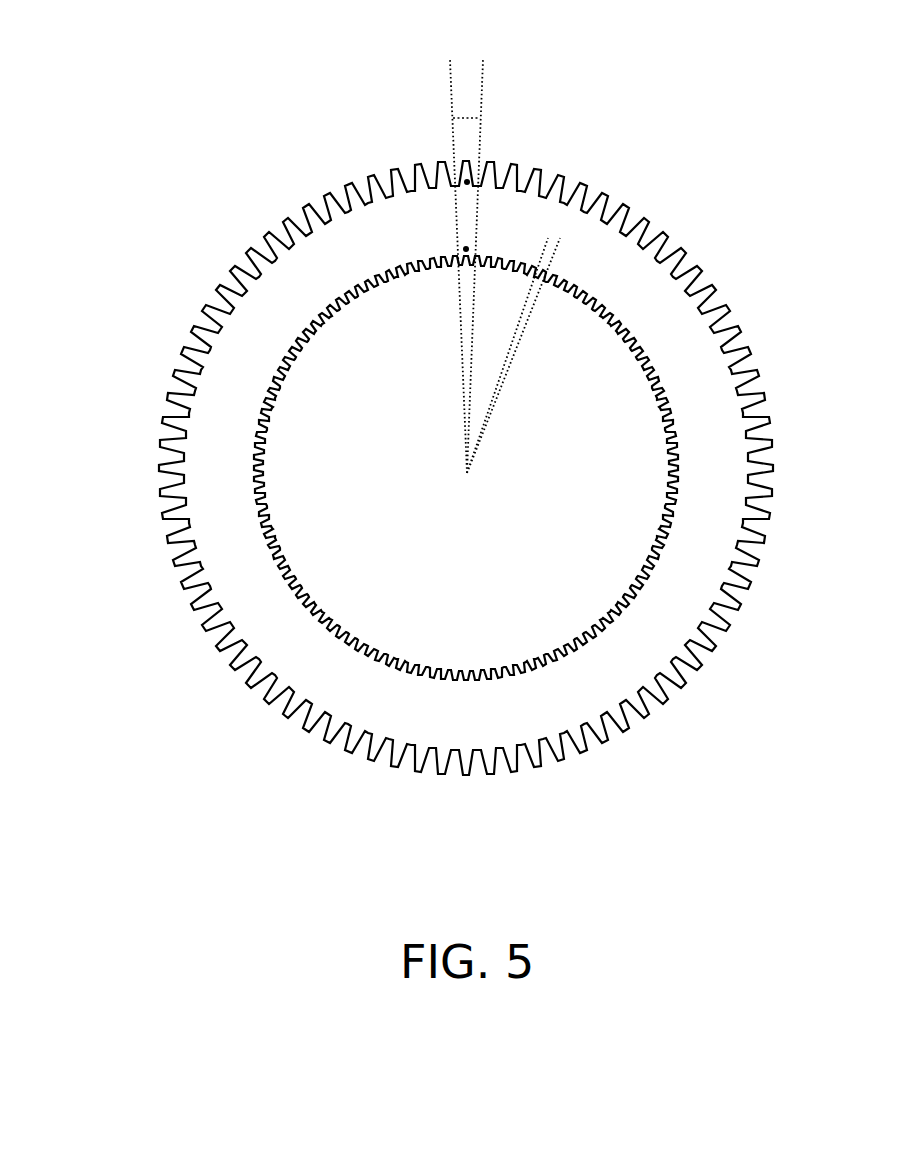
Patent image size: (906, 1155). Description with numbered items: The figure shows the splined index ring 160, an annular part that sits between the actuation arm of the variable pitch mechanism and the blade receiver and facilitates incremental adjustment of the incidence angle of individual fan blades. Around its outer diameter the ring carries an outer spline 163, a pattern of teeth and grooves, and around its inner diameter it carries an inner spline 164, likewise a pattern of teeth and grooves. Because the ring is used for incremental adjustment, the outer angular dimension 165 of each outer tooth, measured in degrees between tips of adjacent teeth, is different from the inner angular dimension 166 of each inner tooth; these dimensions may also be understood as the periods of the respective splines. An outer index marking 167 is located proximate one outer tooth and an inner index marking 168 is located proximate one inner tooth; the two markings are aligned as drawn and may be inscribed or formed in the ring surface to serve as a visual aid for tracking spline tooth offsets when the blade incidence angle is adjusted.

The splined index ring 160 is at (353, 252).
The outer spline 163 is at (150, 348).
The inner spline 164 is at (297, 376).
The outer angular dimension 165 is at (467, 118).
The inner angular dimension 166 is at (552, 258).
The outer index marking 167 is at (467, 182).
The inner index marking 168 is at (466, 249).